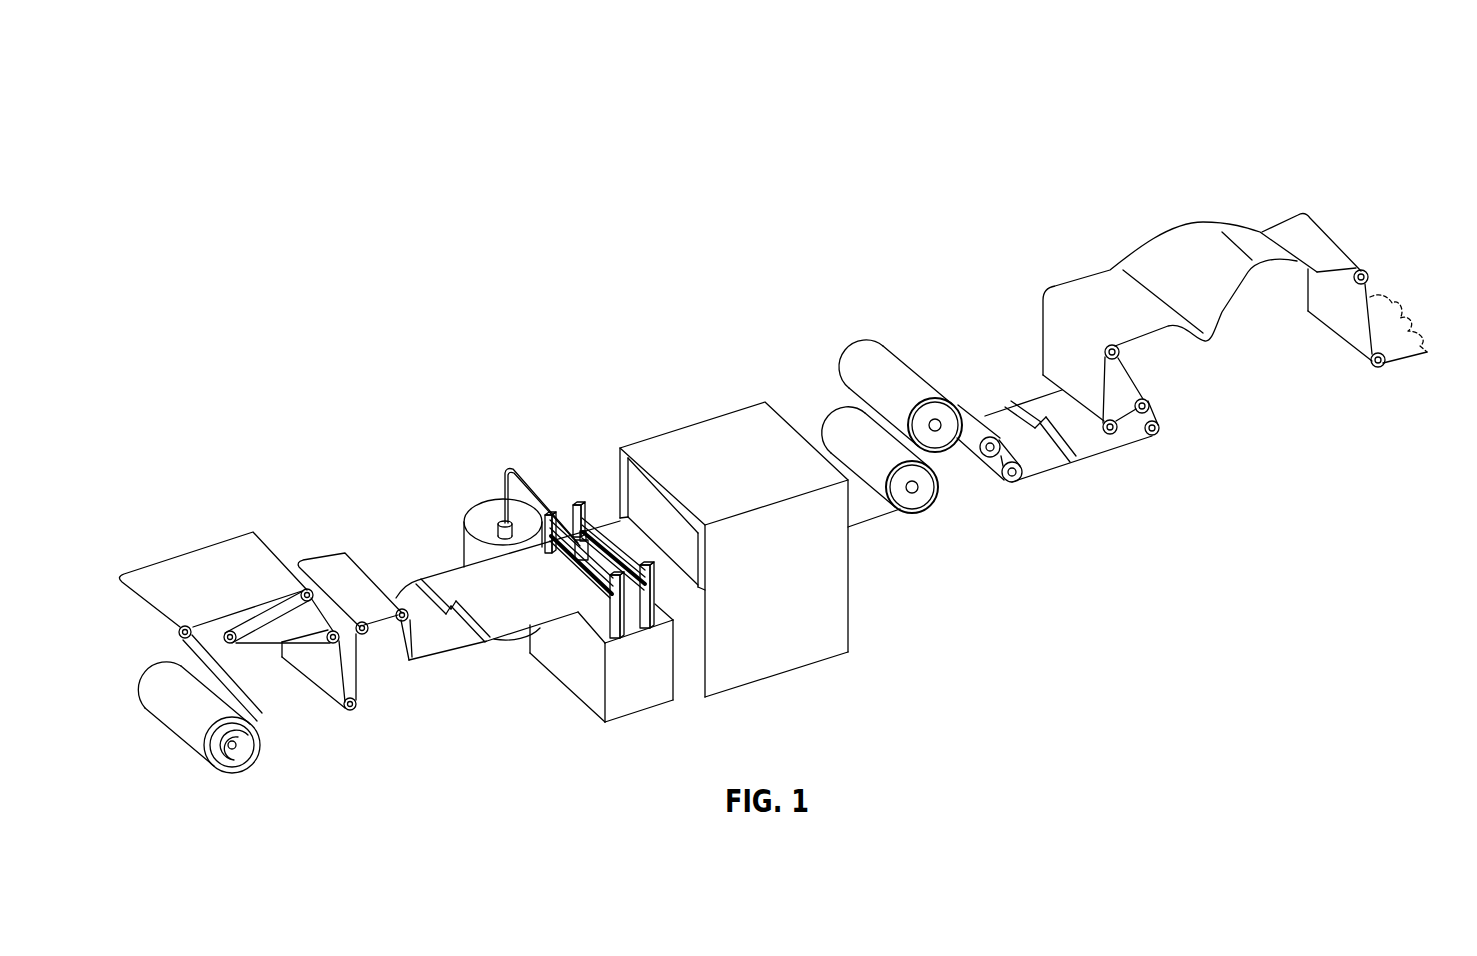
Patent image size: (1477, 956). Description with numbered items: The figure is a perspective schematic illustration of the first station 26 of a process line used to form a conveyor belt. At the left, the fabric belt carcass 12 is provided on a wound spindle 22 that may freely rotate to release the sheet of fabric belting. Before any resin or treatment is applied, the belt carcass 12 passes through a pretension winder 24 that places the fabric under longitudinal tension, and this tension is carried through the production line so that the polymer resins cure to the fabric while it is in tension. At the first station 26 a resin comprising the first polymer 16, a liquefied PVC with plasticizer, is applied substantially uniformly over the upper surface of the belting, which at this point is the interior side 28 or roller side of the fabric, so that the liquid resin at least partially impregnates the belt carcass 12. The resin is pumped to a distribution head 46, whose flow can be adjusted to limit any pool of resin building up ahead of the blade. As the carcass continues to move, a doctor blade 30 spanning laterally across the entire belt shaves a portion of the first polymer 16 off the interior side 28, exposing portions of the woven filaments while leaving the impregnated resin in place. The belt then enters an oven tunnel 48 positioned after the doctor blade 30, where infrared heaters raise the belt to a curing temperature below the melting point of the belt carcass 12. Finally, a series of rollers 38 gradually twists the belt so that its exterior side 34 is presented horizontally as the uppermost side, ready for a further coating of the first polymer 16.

The belt carcass 12 is at (202, 572).
The wound spindle 22 is at (179, 725).
The pretension winder 24 is at (296, 727).
The first polymer 16 is at (480, 558).
The first station 26 is at (589, 474).
The distribution head 46 is at (558, 508).
The doctor blade 30 is at (610, 535).
The oven tunnel 48 is at (718, 443).
The interior side 28 is at (1053, 423).
The series of rollers 38 is at (1160, 208).
The exterior side 34 is at (1392, 337).